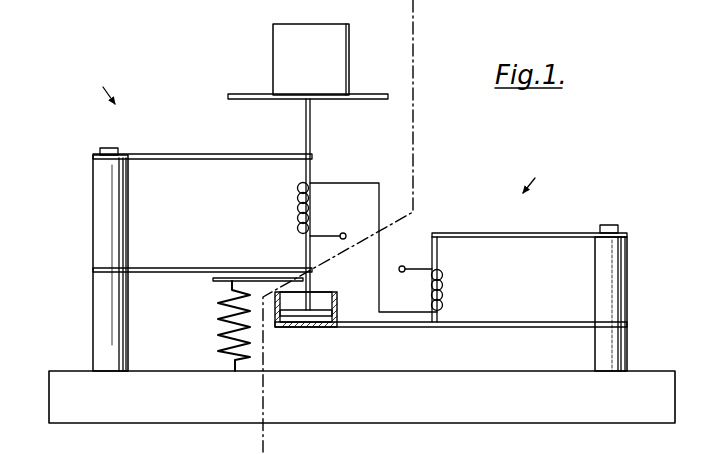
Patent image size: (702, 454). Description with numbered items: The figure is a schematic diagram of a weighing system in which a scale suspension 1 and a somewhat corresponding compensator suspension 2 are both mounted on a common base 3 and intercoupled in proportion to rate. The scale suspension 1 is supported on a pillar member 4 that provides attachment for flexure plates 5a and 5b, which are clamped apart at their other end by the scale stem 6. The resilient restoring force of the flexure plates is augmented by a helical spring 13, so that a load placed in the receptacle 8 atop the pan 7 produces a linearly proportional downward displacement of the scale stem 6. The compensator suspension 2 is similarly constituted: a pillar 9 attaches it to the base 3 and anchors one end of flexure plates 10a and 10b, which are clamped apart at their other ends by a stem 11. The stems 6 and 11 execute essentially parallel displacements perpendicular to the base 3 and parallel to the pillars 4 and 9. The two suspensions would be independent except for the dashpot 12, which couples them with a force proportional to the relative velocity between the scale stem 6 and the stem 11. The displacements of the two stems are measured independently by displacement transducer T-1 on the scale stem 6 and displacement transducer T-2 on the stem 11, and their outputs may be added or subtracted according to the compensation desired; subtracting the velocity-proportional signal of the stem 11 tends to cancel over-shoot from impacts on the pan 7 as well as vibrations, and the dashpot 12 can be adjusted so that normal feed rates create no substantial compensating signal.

The scale suspension 1 is at (73, 237).
The compensator suspension 2 is at (640, 272).
The base 3 is at (398, 424).
The pillar member 4 is at (128, 230).
The flexure plate 5a is at (222, 160).
The flexure plate 5b is at (208, 268).
The scale stem 6 is at (311, 173).
The pan 7 is at (228, 97).
The receptacle 8 is at (273, 53).
The pillar 9 is at (595, 277).
The flexure plate 10a is at (537, 233).
The flexure plate 10b is at (505, 329).
The stem 11 is at (438, 255).
The dashpot 12 is at (339, 300).
The helical spring 13 is at (215, 326).
The displacement transducer T-1 is at (297, 212).
The displacement transducer T-2 is at (449, 290).